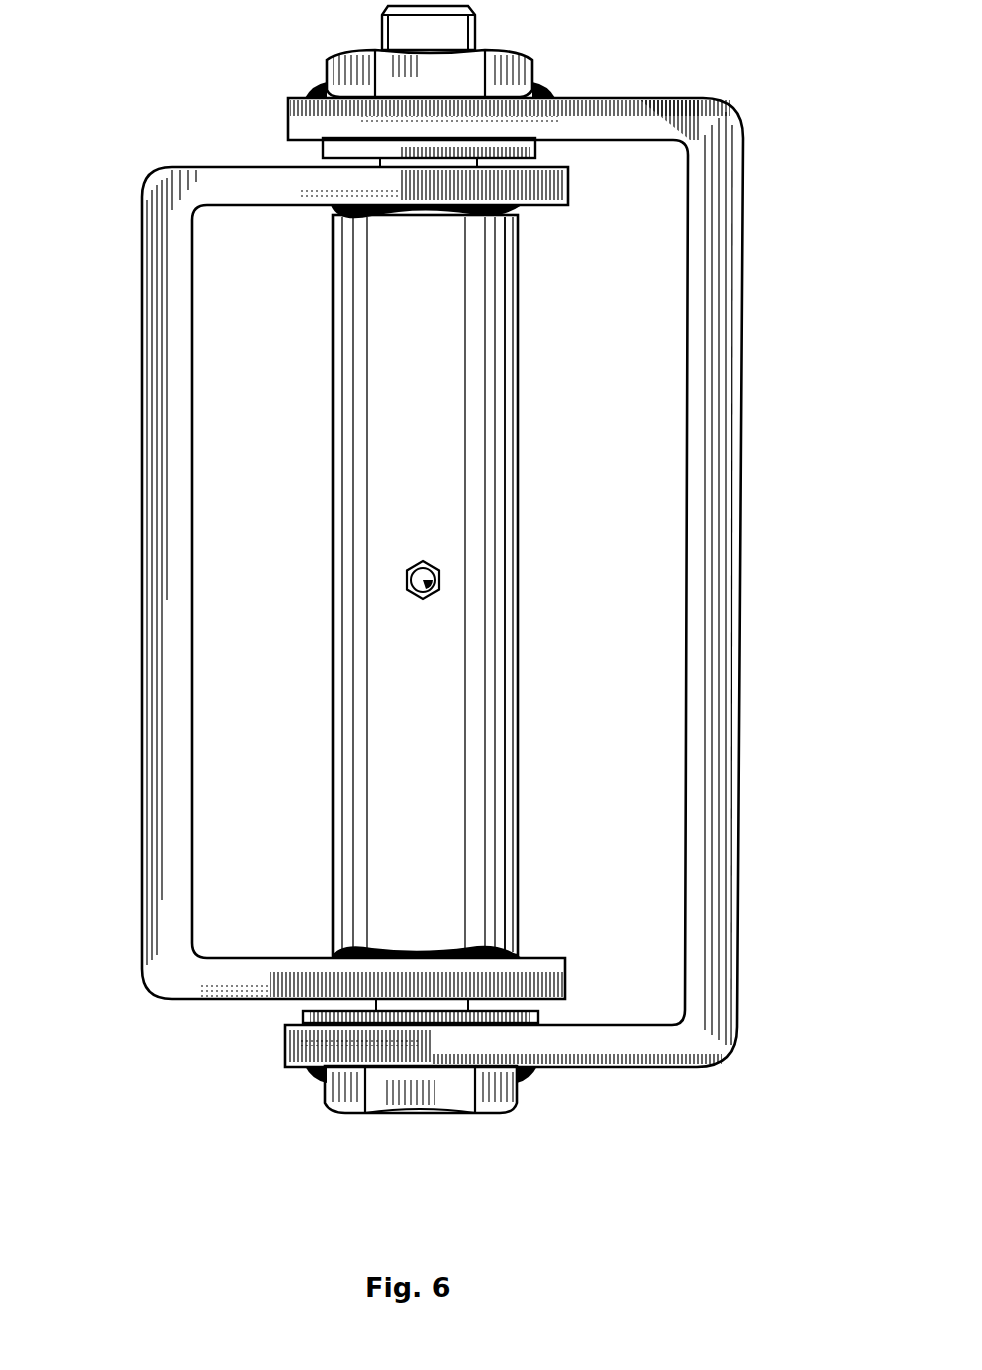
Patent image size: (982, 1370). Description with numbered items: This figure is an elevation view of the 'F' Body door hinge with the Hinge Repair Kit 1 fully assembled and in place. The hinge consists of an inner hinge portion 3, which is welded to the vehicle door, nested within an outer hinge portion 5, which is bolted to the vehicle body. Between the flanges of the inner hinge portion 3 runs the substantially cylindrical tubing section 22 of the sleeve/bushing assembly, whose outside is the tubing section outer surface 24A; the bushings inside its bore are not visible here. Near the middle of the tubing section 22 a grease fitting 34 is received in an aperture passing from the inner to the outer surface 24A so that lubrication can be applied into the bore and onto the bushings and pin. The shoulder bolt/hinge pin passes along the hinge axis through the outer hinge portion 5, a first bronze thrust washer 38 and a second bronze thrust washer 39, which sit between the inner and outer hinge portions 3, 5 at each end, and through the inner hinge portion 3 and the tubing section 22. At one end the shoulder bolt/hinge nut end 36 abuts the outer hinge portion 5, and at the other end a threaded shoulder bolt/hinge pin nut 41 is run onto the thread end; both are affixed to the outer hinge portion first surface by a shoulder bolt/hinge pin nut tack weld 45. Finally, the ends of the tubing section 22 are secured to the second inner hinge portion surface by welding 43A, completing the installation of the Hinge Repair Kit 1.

The Hinge Repair Kit 1 is at (471, 581).
The inner hinge portion 3 is at (138, 483).
The outer hinge portion 5 is at (738, 612).
The tubing section 22 is at (482, 585).
The tubing section outer surface 24A is at (507, 407).
The grease fitting 34 is at (438, 568).
The shoulder bolt/hinge nut end 36 is at (500, 1105).
The first bronze thrust washer 38 is at (323, 157).
The second bronze thrust washer 39 is at (303, 1012).
The shoulder bolt/hinge pin nut 41 is at (530, 70).
The welding 43A is at (333, 217).
The shoulder bolt/hinge pin nut tack weld 45 is at (317, 92).